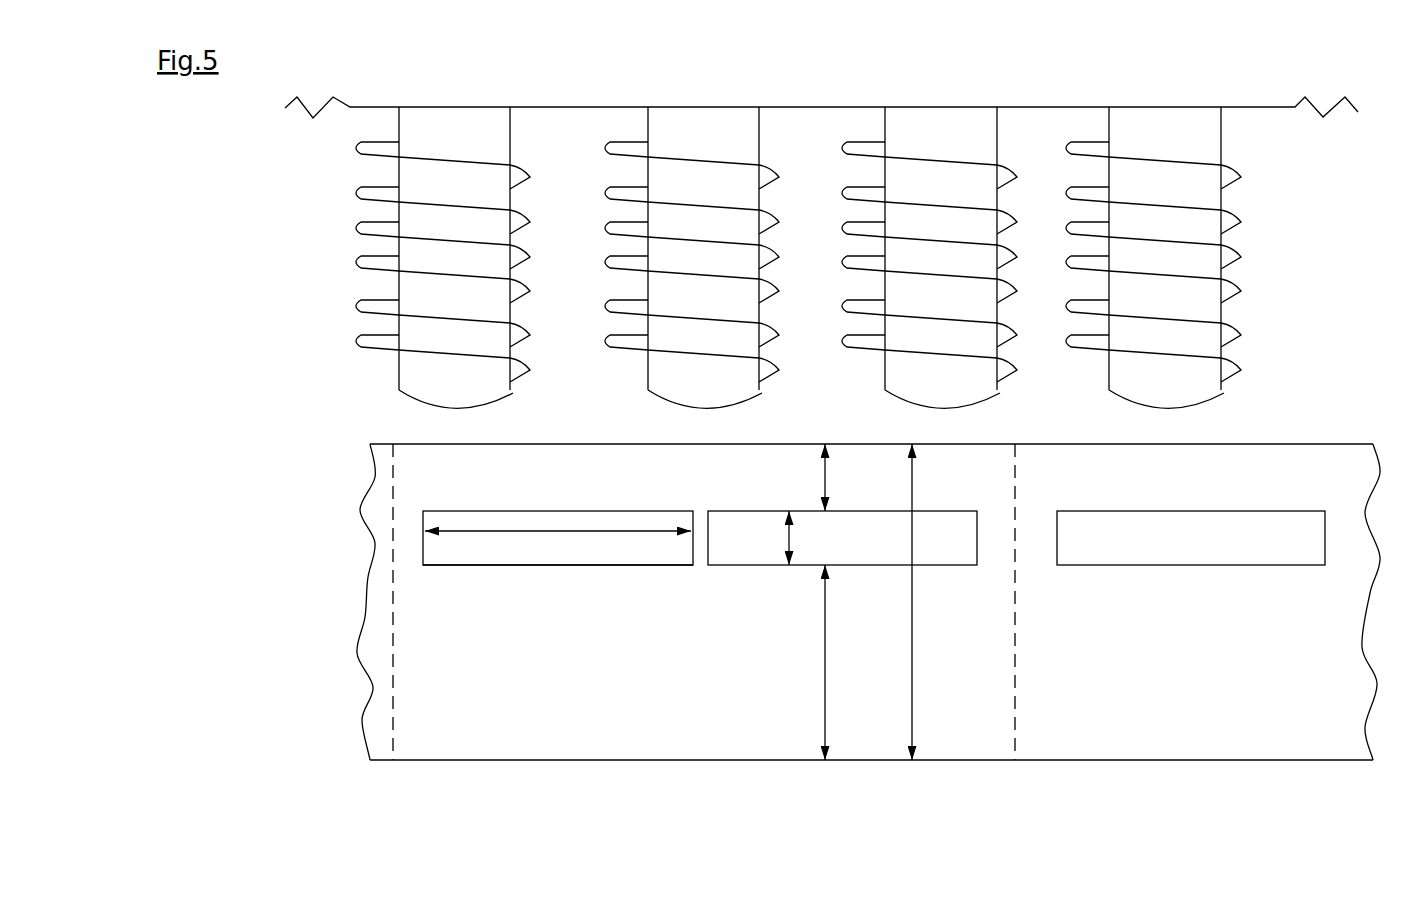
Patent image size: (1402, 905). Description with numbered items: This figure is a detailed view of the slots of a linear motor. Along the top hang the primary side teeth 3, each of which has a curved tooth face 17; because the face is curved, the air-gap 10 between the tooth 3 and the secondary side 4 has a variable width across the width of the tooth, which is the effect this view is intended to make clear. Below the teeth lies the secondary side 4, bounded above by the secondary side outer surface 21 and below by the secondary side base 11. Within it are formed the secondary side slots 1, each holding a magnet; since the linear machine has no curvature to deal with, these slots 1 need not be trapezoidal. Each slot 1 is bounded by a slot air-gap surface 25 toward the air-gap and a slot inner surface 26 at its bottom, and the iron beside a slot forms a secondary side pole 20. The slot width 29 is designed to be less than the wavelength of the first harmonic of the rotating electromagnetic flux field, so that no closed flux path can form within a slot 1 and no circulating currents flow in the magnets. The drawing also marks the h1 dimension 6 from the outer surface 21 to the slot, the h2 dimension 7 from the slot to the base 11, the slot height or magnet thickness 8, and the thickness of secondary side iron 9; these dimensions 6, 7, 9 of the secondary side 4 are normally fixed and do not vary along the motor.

The secondary side slot/magnet 1 is at (947, 532).
The primary side tooth 3 is at (1195, 143).
The secondary side 4 is at (868, 616).
The h1 dimension 6 is at (828, 495).
The h2 dimension 7 is at (828, 630).
The slot height or magnet thickness 8 is at (793, 545).
The thickness of secondary side iron 9 is at (918, 640).
The air-gap 10 is at (450, 423).
The secondary side base 11 is at (713, 762).
The curved tooth face 17 is at (450, 403).
The secondary side pole 20 is at (452, 690).
The secondary side outer surface 21 is at (1188, 443).
The slot air-gap surface 25 is at (487, 562).
The slot inner surface 26 is at (615, 567).
The slot width 29 is at (567, 530).